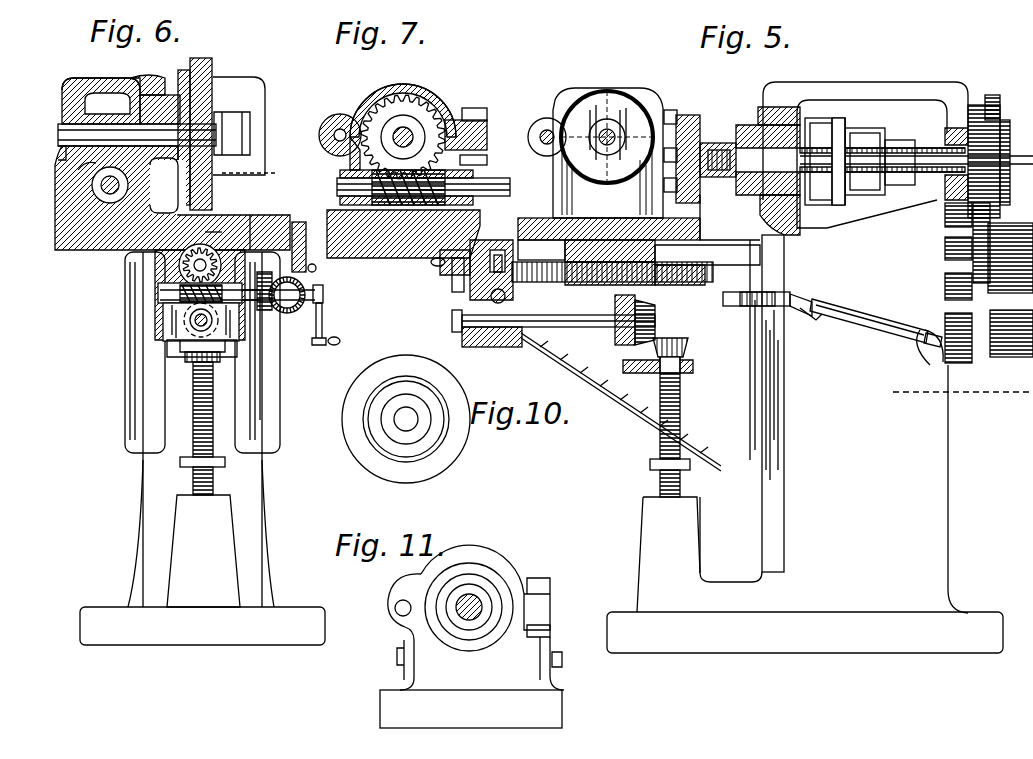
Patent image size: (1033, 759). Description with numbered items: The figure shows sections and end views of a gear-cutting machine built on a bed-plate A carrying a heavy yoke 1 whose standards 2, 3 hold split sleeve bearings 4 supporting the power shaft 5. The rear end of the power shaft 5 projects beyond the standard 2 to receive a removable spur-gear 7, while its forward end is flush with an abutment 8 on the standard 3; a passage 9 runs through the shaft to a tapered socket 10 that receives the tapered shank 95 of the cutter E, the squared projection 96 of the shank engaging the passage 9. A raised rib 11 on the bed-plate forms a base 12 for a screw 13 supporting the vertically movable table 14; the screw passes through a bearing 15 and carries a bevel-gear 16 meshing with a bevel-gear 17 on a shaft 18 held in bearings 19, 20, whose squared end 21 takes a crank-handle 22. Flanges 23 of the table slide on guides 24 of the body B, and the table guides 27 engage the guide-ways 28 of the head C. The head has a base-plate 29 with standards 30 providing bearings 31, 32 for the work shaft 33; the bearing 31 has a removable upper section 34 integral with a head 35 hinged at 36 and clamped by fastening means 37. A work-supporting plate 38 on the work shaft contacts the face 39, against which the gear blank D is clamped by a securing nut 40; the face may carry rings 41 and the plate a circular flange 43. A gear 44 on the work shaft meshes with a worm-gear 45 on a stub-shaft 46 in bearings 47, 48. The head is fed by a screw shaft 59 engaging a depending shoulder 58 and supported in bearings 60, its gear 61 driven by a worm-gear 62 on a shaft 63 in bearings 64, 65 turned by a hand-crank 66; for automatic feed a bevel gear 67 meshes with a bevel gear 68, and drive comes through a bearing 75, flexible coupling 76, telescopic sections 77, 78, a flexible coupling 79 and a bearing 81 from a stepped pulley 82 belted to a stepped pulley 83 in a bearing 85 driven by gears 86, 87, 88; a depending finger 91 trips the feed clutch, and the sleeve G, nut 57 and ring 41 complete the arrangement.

In FIG. 5, the yoke 1 is at (885, 92).
In FIG. 5, the standard 2 is at (960, 96).
In FIG. 6, the standard 3 is at (218, 82).
In FIG. 5, the standard 3 is at (770, 98).
In FIG. 5, the split sleeve bearings 4 is at (740, 140).
In FIG. 5, the power shaft 5 is at (878, 152).
In FIG. 5, the spur-gear 7 is at (998, 140).
In FIG. 5, the abutment 8 is at (760, 210).
In FIG. 5, the passage 9 is at (945, 218).
In FIG. 5, the tapered socket 10 is at (810, 150).
In FIG. 5, the raised rib 11 is at (712, 578).
In FIG. 6, the base 12 is at (182, 542).
In FIG. 5, the base 12 is at (648, 542).
In FIG. 6, the screw 13 is at (194, 455).
In FIG. 5, the screw 13 is at (660, 450).
In FIG. 5, the table 14 is at (540, 352).
In FIG. 5, the bearing 15 is at (688, 366).
In FIG. 6, the bevel-gear 16 is at (182, 346).
In FIG. 5, the bevel-gear 16 is at (680, 340).
In FIG. 6, the bevel-gear 17 is at (184, 330).
In FIG. 5, the bevel-gear 17 is at (656, 308).
In FIG. 5, the shaft 18 is at (572, 316).
In FIG. 5, the bearing 19 is at (622, 310).
In FIG. 5, the bearing 20 is at (470, 336).
In FIG. 5, the squared end 21 is at (452, 322).
In FIG. 5, the crank-handle 22 is at (460, 290).
In FIG. 6, the flanges 23 is at (128, 362).
In FIG. 5, the flanges 23 is at (772, 452).
In FIG. 6, the guides 24 is at (143, 484).
In FIG. 5, the guides 24 is at (762, 506).
In FIG. 6, the guides 27 is at (120, 254).
In FIG. 6, the guide-ways 28 is at (134, 268).
In FIG. 6, the base-plate 29 is at (258, 214).
In FIG. 5, the base-plate 29 is at (648, 215).
In FIG. 6, the standards 30 is at (142, 80).
In FIG. 7, the standards 30 is at (422, 92).
In FIG. 11, the standards 30 is at (484, 554).
In FIG. 5, the standards 30 is at (592, 92).
In FIG. 6, the bearing 31 is at (66, 150).
In FIG. 6, the bearing 32 is at (150, 80).
In FIG. 6, the work shaft 33 is at (60, 136).
In FIG. 7, the work shaft 33 is at (410, 132).
In FIG. 11, the work shaft 33 is at (478, 600).
In FIG. 5, the work shaft 33 is at (612, 132).
In FIG. 6, the upper section 34 is at (72, 100).
In FIG. 7, the upper section 34 is at (372, 105).
In FIG. 5, the upper section 34 is at (556, 198).
In FIG. 6, the head 35 is at (66, 86).
In FIG. 7, the head 35 is at (388, 94).
In FIG. 11, the head 35 is at (430, 572).
In FIG. 5, the head 35 is at (580, 100).
In FIG. 7, the hinge 36 is at (336, 142).
In FIG. 11, the hinge 36 is at (398, 614).
In FIG. 5, the hinge 36 is at (542, 141).
In FIG. 7, the fastening means 37 is at (480, 110).
In FIG. 11, the fastening means 37 is at (548, 580).
In FIG. 6, the work-supporting plate 38 is at (194, 80).
In FIG. 6, the face 39 is at (168, 185).
In FIG. 5, the face 39 is at (618, 178).
In FIG. 6, the securing nut 40 is at (240, 126).
In FIG. 11, the rings 41 is at (500, 607).
In FIG. 10, the circular flange 43 is at (433, 451).
In FIG. 6, the gear 44 is at (98, 165).
In FIG. 7, the gear 44 is at (344, 176).
In FIG. 6, the worm-gear 45 is at (101, 191).
In FIG. 7, the worm-gear 45 is at (344, 190).
In FIG. 6, the stub-shaft 46 is at (64, 250).
In FIG. 11, the stub-shaft 46 is at (398, 662).
In FIG. 5, the stub-shaft 46 is at (550, 104).
In FIG. 7, the bearing 47 is at (350, 208).
In FIG. 7, the bearing 48 is at (484, 184).
In FIG. 5, the lead screw 57 is at (560, 285).
In FIG. 5, the depending shoulder 58 is at (540, 330).
In FIG. 5, the screw shaft 59 is at (672, 280).
In FIG. 5, the bearings 60 is at (740, 258).
In FIG. 6, the gear 61 is at (214, 232).
In FIG. 5, the gear 61 is at (498, 252).
In FIG. 5, the worm-gear 62 is at (503, 296).
In FIG. 5, the shaft 63 is at (456, 300).
In FIG. 6, the bearing 64 is at (176, 296).
In FIG. 6, the bearing 65 is at (268, 305).
In FIG. 6, the hand-crank 66 is at (324, 330).
In FIG. 6, the bevel gear 67 is at (306, 286).
In FIG. 6, the bevel gear 68 is at (323, 296).
In FIG. 5, the bearing 75 is at (786, 292).
In FIG. 5, the flexible coupling 76 is at (812, 302).
In FIG. 5, the telescopic shaft section 77 is at (816, 322).
In FIG. 5, the telescopic section 78 is at (874, 318).
In FIG. 5, the flexible coupling 79 is at (926, 340).
In FIG. 5, the bearing 81 is at (958, 360).
In FIG. 5, the stepped pulley 82 is at (1011, 345).
In FIG. 5, the stepped pulley 83 is at (1004, 250).
In FIG. 5, the bearing 85 is at (946, 282).
In FIG. 5, the gear 86 is at (946, 258).
In FIG. 5, the gear 87 is at (946, 236).
In FIG. 5, the gear 88 is at (972, 118).
In FIG. 6, the depending finger 91 is at (316, 268).
In FIG. 5, the tapered shank 95 is at (710, 175).
In FIG. 5, the squared projection 96 is at (845, 195).
In FIG. 6, the bed-plate A is at (280, 617).
In FIG. 5, the bed-plate A is at (952, 625).
In FIG. 6, the body B is at (268, 570).
In FIG. 5, the body B is at (930, 505).
In FIG. 6, the head C is at (56, 230).
In FIG. 7, the head C is at (398, 251).
In FIG. 5, the head C is at (542, 226).
In FIG. 6, the gear blank D is at (262, 172).
In FIG. 5, the cutter E is at (682, 156).
In FIG. 5, the sleeve slot G is at (860, 130).